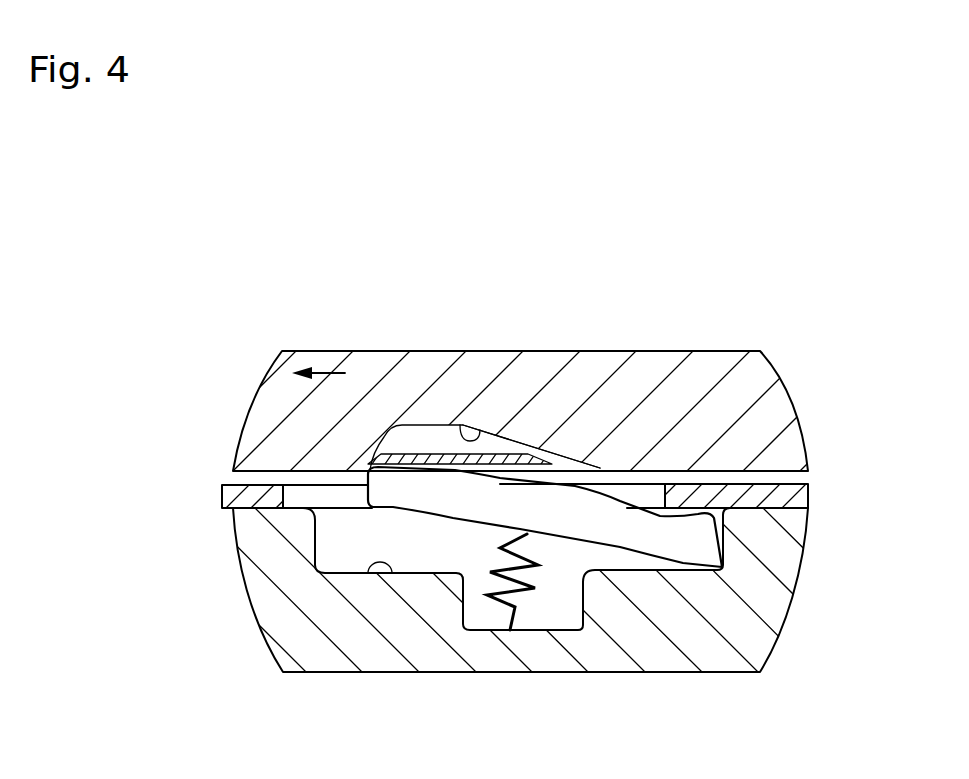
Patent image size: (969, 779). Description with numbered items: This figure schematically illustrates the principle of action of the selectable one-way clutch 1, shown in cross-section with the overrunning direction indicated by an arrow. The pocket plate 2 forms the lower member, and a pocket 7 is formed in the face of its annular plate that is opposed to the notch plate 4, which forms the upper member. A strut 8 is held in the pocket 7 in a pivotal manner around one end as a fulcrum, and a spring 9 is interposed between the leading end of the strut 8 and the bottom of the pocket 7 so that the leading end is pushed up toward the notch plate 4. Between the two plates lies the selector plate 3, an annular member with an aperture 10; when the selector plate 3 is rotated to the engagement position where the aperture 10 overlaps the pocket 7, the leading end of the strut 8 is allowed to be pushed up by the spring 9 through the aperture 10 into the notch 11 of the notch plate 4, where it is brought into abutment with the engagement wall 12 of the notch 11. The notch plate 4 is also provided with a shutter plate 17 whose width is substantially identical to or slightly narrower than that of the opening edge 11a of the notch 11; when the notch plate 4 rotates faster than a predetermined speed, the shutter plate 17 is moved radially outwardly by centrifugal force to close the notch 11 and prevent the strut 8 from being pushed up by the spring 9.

The selectable one-way clutch 1 is at (506, 470).
The pocket plate 2 is at (720, 653).
The selector plate 3 is at (803, 493).
The notch plate 4 is at (790, 388).
The pocket 7 is at (396, 580).
The strut 8 is at (380, 506).
The spring 9 is at (522, 590).
The aperture 10 is at (662, 497).
The notch 11 is at (519, 453).
The opening edge 11a is at (596, 476).
The engagement wall 12 is at (393, 428).
The shutter plate 17 is at (543, 454).